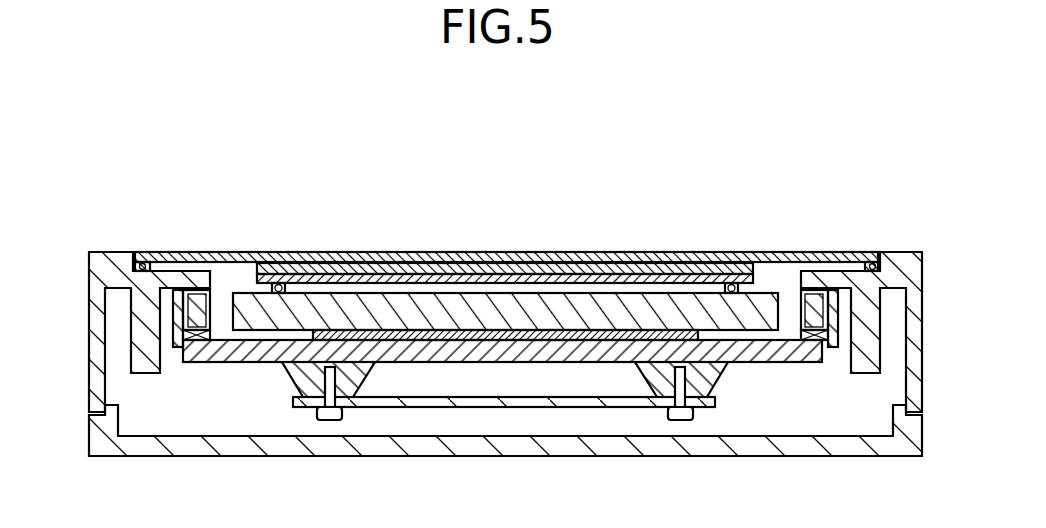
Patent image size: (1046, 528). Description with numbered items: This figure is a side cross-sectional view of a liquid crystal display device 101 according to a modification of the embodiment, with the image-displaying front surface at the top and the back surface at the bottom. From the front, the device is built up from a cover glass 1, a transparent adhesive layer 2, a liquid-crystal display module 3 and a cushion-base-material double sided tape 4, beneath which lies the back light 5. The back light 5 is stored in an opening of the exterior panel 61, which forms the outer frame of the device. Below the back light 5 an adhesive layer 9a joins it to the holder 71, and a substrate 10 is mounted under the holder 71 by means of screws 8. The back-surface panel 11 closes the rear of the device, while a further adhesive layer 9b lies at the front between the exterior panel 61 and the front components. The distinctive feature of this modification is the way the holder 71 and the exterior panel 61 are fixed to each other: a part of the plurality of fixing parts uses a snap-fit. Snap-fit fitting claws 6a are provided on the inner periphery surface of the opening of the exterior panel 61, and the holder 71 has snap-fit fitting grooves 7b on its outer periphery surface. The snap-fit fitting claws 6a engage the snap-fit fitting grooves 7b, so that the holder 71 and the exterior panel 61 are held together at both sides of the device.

The liquid crystal display device 101 is at (522, 138).
The cover glass 1 is at (505, 233).
The transparent adhesive layer 2 is at (462, 263).
The liquid-crystal display module 3 is at (520, 263).
The cushion-base-material double sided tape 4 is at (278, 283).
The back light 5 is at (595, 310).
The snap-fit fitting claws 6a is at (186, 334).
The snap-fit fitting grooves 7b is at (203, 342).
The screws 8 is at (330, 421).
The adhesive layer 9a is at (435, 340).
The adhesive layer 9b is at (143, 252).
The substrate 10 is at (502, 402).
The back-surface panel 11 is at (577, 446).
The exterior panel 61 is at (113, 252).
The holder 71 is at (255, 362).